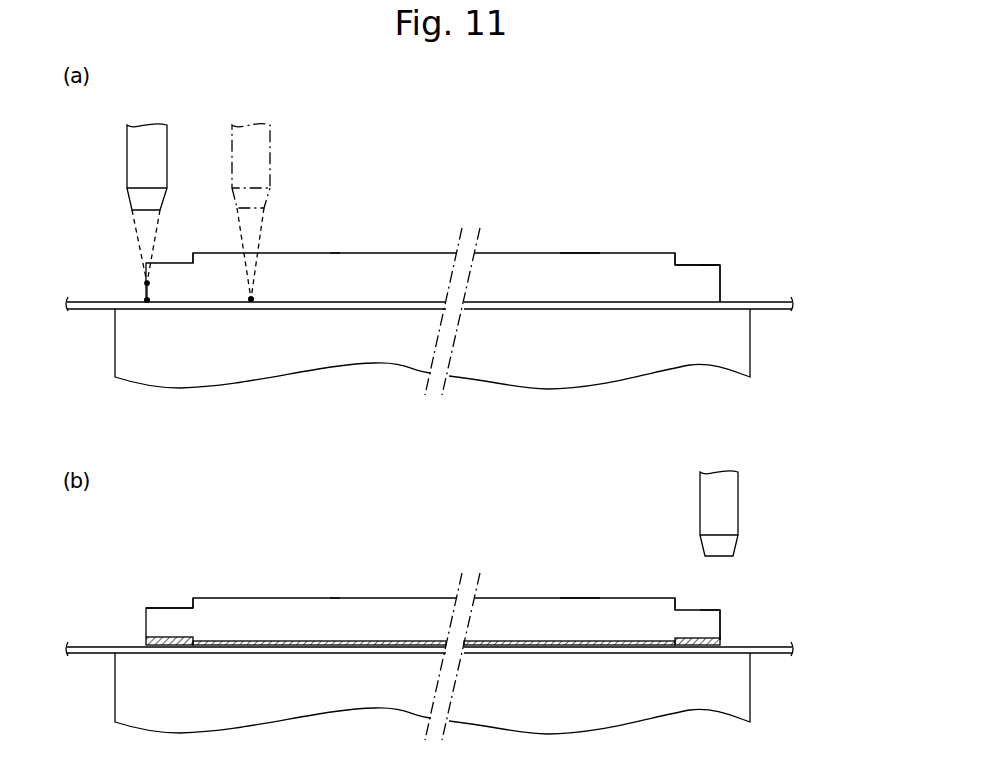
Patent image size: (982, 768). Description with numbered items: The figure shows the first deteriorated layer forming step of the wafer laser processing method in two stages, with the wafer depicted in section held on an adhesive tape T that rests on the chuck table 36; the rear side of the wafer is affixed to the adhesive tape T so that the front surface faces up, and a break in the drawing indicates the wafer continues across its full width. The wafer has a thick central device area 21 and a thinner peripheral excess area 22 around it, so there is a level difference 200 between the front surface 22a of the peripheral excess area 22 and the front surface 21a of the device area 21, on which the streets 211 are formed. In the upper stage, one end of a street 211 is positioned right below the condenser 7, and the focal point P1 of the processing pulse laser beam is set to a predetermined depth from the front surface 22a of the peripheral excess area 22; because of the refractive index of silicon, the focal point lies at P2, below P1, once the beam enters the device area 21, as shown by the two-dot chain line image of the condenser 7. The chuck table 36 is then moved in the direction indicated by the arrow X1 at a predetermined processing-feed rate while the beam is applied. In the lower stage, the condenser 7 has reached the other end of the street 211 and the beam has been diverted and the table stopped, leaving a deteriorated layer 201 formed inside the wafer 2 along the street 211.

The stator core (workpiece) 2 is at (578, 218).
The condenser 7 is at (174, 144).
The device area 21 is at (395, 252).
The front surface of the device area 21a is at (332, 252).
The peripheral excess area 22 is at (690, 256).
The front surface of the peripheral excess area 22a is at (708, 261).
The chuck table 36 is at (740, 347).
The boundary / step edge 200 is at (193, 249).
The deteriorated layer 201 is at (182, 636).
The street 211 is at (730, 252).
The focal point P1 is at (146, 298).
The focal point P2 is at (253, 298).
The adhesive tape T is at (95, 311).
The direction X1 is at (487, 418).